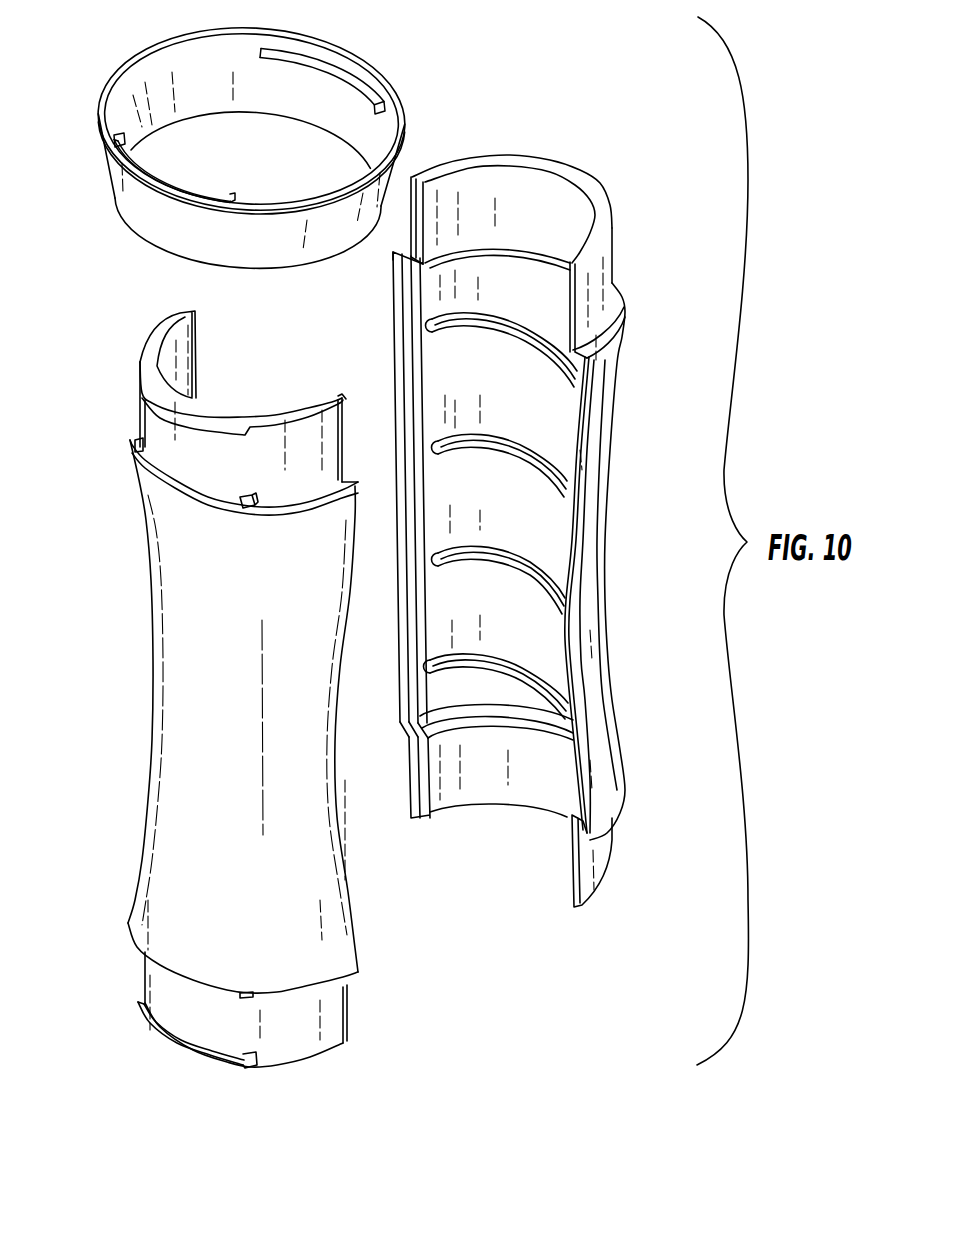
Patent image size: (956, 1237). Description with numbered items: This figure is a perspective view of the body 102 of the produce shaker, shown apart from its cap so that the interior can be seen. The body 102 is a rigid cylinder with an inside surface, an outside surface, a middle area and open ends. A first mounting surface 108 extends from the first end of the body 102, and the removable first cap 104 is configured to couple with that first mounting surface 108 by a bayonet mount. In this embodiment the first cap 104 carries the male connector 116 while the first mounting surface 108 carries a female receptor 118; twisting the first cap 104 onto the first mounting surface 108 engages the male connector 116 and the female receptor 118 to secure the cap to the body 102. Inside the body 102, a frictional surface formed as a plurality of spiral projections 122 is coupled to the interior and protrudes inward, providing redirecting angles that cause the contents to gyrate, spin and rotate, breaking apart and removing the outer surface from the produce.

The body 102 is at (153, 592).
The first cap 104 is at (357, 60).
The first mounting surface 108 is at (160, 436).
The male connector 116 is at (377, 99).
The female receptor 118 is at (145, 366).
The spiral projections 122 is at (480, 665).